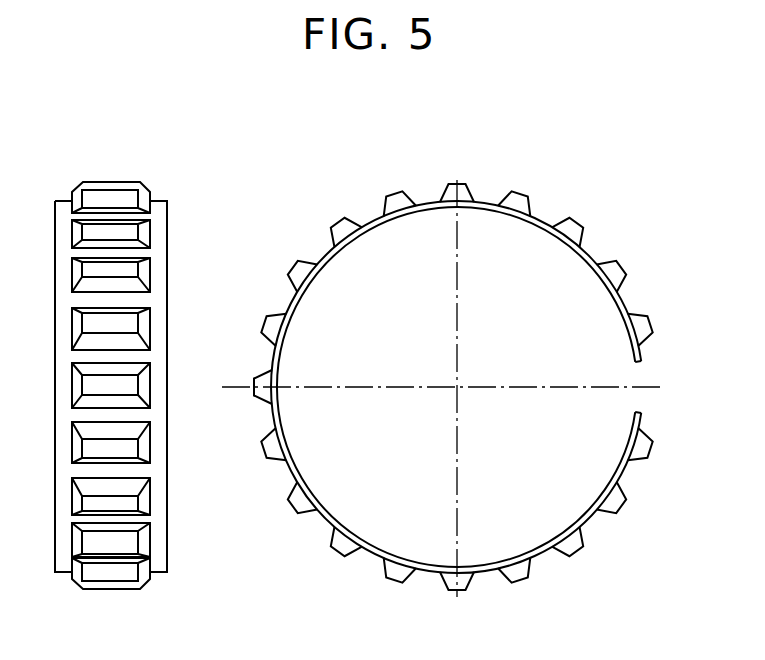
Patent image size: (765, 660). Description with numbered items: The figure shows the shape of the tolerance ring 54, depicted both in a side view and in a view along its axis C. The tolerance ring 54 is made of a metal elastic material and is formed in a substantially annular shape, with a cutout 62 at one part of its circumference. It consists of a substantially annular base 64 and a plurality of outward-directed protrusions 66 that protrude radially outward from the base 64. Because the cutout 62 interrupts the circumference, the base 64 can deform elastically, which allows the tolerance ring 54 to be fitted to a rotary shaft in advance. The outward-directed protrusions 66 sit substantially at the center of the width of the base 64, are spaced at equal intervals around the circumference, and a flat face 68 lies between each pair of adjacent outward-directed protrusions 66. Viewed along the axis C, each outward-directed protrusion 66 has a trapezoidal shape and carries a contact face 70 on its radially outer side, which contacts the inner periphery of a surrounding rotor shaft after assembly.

The tolerance ring 54 is at (253, 163).
The cutout 62 is at (640, 364).
The base 64 is at (485, 208).
The outward-directed protrusion 66 is at (617, 275).
The flat face 68 is at (543, 218).
The contact face 70 is at (395, 194).
The axis C is at (451, 390).